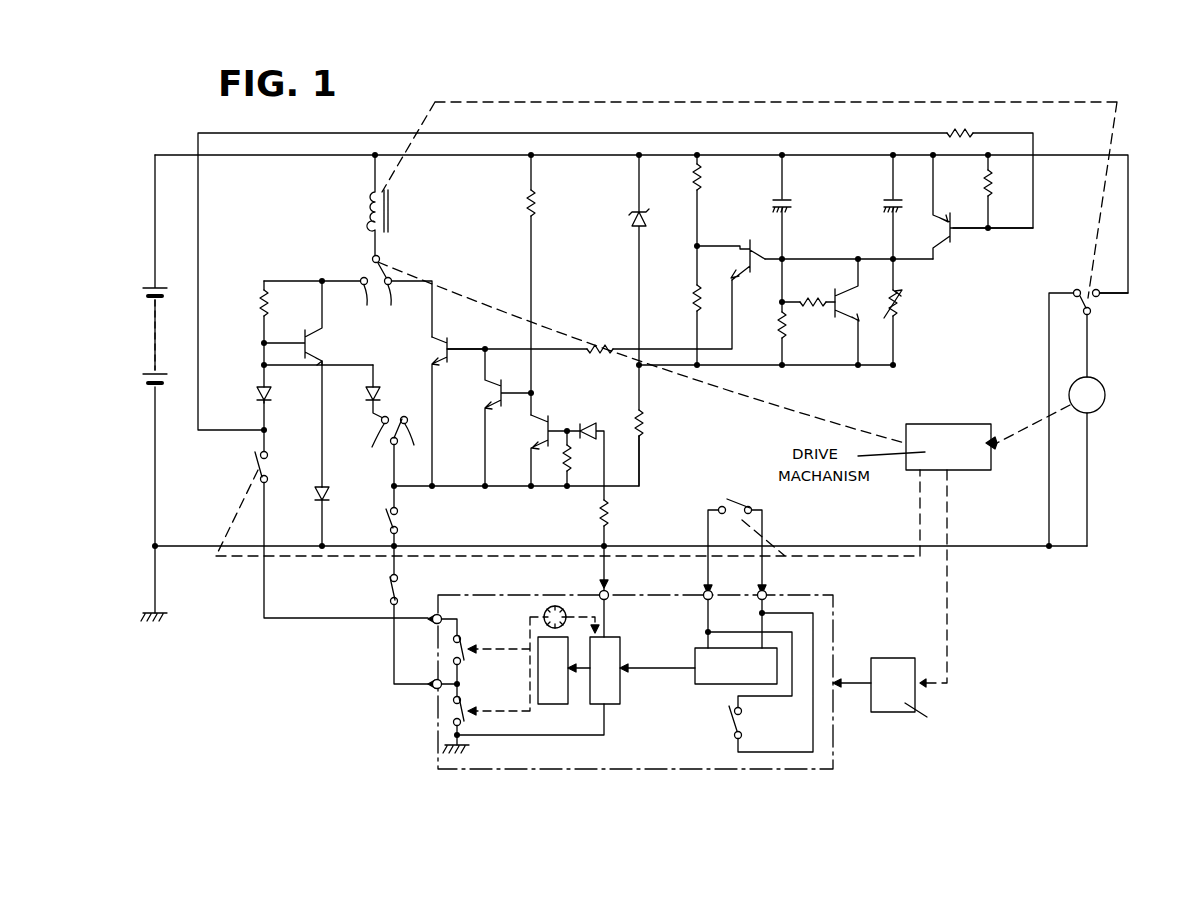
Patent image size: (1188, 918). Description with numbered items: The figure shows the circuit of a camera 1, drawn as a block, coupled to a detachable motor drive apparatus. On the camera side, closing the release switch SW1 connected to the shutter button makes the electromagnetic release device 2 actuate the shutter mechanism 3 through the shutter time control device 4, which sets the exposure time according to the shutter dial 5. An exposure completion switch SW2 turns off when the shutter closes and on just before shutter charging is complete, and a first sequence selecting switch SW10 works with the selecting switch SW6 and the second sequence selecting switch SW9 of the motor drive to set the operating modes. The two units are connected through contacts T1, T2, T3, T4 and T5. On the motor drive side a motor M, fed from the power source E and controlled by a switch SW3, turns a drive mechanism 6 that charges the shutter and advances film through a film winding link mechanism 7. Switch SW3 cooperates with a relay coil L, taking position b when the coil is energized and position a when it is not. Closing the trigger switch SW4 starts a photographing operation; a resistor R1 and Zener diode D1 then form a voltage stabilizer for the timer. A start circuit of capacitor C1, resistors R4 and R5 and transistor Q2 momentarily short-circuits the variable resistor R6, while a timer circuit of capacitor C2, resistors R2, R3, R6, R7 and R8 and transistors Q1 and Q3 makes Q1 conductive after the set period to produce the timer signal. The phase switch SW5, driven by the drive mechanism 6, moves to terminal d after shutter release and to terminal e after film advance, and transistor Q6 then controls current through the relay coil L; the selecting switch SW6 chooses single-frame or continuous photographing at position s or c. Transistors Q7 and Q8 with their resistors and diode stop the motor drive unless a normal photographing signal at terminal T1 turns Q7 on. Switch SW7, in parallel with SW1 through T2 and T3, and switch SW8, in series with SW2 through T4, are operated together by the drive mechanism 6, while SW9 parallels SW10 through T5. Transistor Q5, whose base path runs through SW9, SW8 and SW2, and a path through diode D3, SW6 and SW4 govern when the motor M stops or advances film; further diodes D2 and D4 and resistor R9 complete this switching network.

The battery E is at (153, 333).
The relay coil L is at (393, 207).
The resistor R1 is at (655, 430).
The resistor R2 is at (705, 182).
The resistor R3 is at (695, 300).
The resistor R4 is at (779, 335).
The resistor R5 is at (814, 308).
The variable resistor R6 is at (905, 316).
The resistor R7 is at (985, 186).
The resistor R8 is at (975, 130).
The resistor R9 is at (262, 302).
The capacitor C1 is at (796, 206).
The timer capacitor C2 is at (885, 212).
The Zener diode D1 is at (632, 219).
The diode D2 is at (256, 396).
The diode D3 is at (366, 393).
The diode D4 is at (320, 488).
The transistor Q1 is at (747, 275).
The transistor Q2 is at (843, 292).
The transistor Q3 is at (983, 216).
The transistor Q5 is at (322, 350).
The transistor Q6 is at (455, 334).
The transistor Q7 is at (544, 416).
The transistor Q8 is at (498, 398).
The release switch SW1 is at (727, 729).
The exposure completion switch SW2 is at (463, 642).
The switch SW3 is at (1108, 404).
The trigger switch SW4 is at (400, 517).
The phase switch SW5 is at (346, 285).
The selecting switch SW6 is at (397, 413).
The switch SW7 is at (728, 500).
The switch SW8 is at (258, 457).
The second sequence selecting switch SW9 is at (388, 594).
The first sequence selecting switch SW10 is at (464, 704).
The terminal T1 is at (600, 592).
The terminal T2 is at (768, 593).
The terminal T3 is at (703, 592).
The terminal T4 is at (436, 614).
The terminal T5 is at (432, 688).
The position a is at (1074, 291).
The position b is at (1111, 279).
The position c is at (410, 441).
The terminal d is at (364, 308).
The terminal e is at (390, 308).
The position s is at (374, 441).
The motor M is at (1087, 461).
The camera 1 is at (833, 623).
The electromagnetic release device 2 is at (758, 663).
The shutter mechanism 3 is at (558, 694).
The shutter time control device 4 is at (612, 647).
The shutter dial 5 is at (543, 615).
The drive mechanism 6 is at (947, 424).
The film winding link mechanism 7 is at (890, 714).